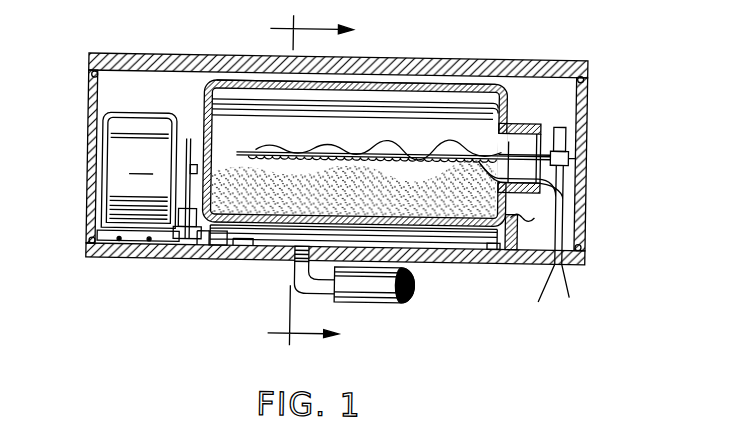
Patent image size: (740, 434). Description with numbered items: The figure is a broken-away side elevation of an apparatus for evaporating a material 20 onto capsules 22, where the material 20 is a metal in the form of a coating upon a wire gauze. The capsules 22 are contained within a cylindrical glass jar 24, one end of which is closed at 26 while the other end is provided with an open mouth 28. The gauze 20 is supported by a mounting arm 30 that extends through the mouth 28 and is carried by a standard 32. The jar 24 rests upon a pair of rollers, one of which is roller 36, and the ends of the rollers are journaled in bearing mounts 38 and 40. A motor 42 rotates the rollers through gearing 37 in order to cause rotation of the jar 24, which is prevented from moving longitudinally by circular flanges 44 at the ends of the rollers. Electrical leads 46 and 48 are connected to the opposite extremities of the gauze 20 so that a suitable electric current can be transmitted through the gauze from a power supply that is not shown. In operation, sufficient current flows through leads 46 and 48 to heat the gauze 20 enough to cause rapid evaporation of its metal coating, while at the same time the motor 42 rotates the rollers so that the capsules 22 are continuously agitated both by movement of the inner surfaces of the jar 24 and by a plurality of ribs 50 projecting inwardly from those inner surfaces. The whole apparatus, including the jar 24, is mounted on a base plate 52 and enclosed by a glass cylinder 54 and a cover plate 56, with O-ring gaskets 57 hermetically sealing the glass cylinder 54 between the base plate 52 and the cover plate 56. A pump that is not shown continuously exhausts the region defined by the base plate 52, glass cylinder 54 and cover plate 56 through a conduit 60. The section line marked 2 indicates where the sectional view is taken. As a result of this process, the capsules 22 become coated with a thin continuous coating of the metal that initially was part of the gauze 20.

The section line 2- 2 is at (301, 180).
The material 20 is at (242, 158).
The capsules 22 is at (292, 200).
The cylindrical glass jar 24 is at (391, 88).
The closed end 26 is at (206, 113).
The open mouth 28 is at (504, 131).
The mounting arm 30 is at (440, 152).
The standard 32 is at (561, 120).
The roller 36 is at (436, 230).
The gearing 37 is at (143, 248).
The bearing mount 38 is at (211, 241).
The bearing mount 40 is at (516, 248).
The motor 42 is at (139, 176).
The circular flanges 44 is at (231, 241).
The electrical lead 46 is at (551, 285).
The electrical lead 48 is at (576, 280).
The ribs 50 is at (211, 100).
The base plate 52 is at (250, 247).
The glass cylinder 54 is at (88, 172).
The cover plate 56 is at (143, 57).
The O-ring gaskets 57 is at (88, 71).
The conduit 60 is at (331, 280).